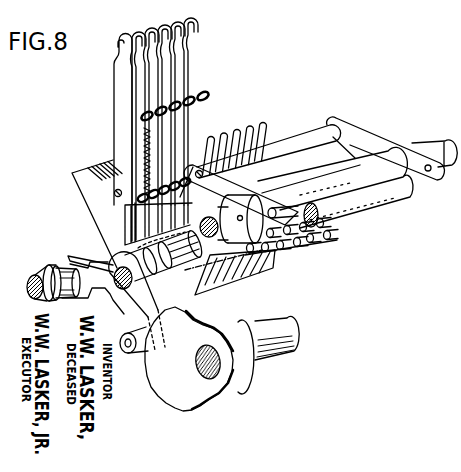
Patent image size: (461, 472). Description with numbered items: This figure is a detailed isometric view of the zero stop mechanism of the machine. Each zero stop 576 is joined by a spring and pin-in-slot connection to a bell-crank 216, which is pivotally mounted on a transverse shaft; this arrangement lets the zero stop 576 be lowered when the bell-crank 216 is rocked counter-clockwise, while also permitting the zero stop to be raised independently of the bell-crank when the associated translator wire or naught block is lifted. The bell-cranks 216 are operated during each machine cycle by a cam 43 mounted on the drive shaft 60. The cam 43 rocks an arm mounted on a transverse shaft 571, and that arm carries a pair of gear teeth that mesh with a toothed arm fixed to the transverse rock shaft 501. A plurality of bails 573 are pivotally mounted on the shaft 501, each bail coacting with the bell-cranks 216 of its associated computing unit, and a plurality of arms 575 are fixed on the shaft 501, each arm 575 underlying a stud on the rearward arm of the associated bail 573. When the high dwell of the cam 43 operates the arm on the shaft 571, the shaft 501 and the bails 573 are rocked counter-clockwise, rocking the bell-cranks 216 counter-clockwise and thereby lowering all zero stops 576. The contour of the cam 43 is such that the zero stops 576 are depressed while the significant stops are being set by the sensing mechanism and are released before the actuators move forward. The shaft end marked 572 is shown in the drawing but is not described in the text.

The zero stop 576 is at (114, 112).
The bail 573 is at (358, 137).
The transverse rock shaft 501 is at (436, 150).
The transverse shaft 571 is at (410, 192).
The shaft end 572 is at (44, 272).
The arm 575 is at (298, 250).
The bell-crank 216 is at (273, 272).
The drive shaft 60 is at (292, 350).
The cam 43 is at (188, 398).